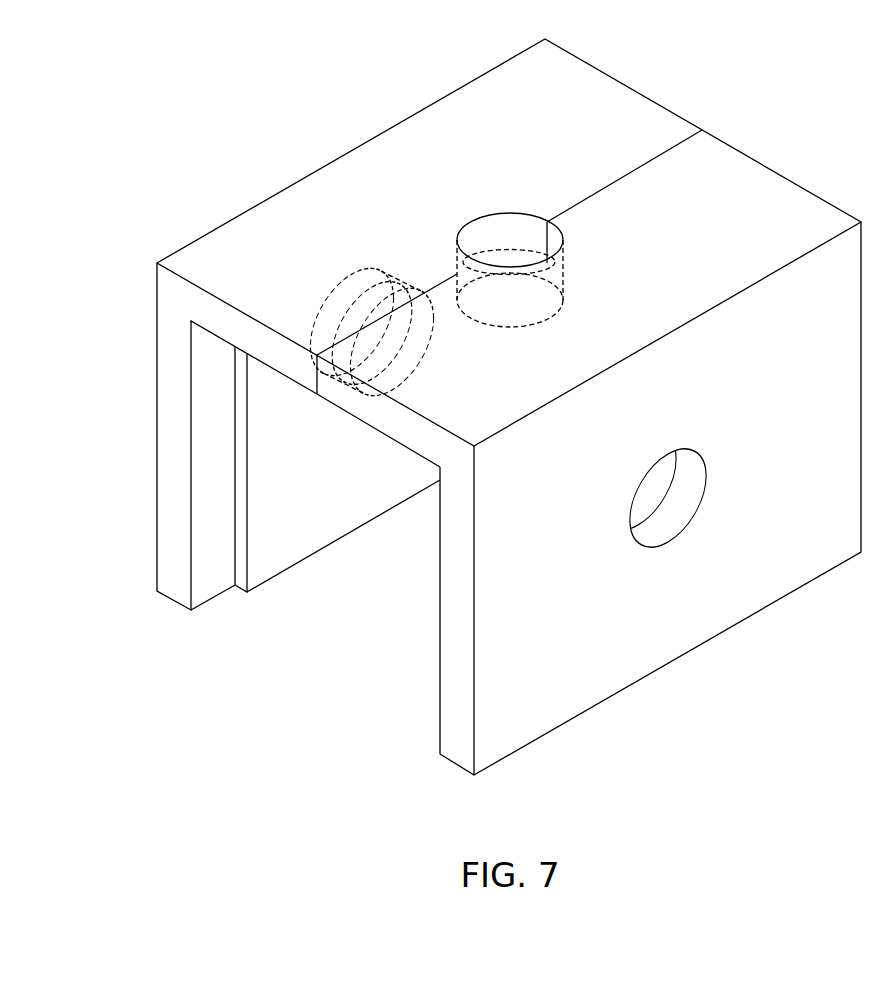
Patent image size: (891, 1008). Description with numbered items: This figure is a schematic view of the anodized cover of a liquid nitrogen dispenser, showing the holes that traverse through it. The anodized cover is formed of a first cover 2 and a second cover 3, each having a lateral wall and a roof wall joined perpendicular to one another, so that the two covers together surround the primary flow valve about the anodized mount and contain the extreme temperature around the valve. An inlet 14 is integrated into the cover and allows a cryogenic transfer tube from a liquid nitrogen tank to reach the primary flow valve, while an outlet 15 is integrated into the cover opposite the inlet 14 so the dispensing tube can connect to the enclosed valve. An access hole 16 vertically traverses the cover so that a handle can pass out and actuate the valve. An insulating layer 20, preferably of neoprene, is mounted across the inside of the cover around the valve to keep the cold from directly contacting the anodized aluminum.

The first cover 2 is at (403, 137).
The second cover 3 is at (776, 196).
The inlet 14 is at (352, 317).
The outlet 15 is at (641, 489).
The access hole 16 is at (507, 270).
The insulating layer 20 is at (287, 547).